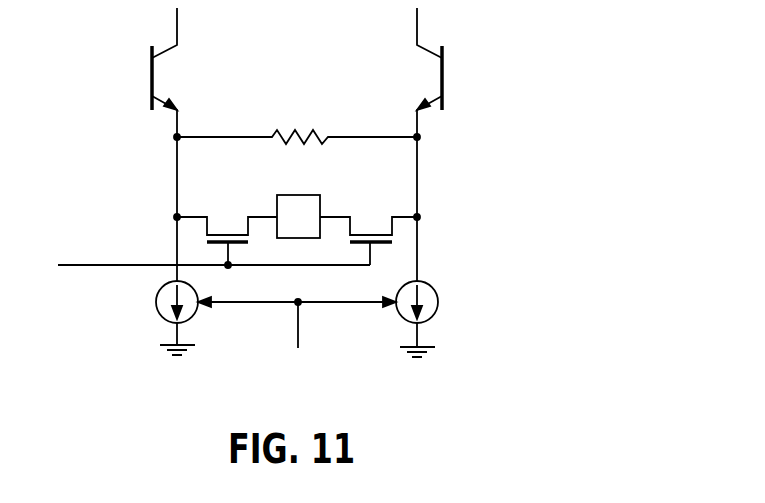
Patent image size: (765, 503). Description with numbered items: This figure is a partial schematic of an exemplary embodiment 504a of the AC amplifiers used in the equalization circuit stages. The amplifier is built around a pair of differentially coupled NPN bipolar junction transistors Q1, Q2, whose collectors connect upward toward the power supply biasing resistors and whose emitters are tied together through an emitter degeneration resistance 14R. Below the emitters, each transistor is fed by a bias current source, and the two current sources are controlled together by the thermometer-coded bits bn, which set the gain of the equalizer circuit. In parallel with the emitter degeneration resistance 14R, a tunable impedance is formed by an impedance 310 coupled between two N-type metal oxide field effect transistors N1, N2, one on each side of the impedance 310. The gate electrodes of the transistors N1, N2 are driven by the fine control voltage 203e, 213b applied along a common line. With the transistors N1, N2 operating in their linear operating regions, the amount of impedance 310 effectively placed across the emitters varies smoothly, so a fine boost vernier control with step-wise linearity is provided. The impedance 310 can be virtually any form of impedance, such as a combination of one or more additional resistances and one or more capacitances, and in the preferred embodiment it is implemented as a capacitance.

The AC amplifier 504a is at (326, 47).
The emitter degeneration resistance 14R is at (297, 121).
The impedance 310 is at (293, 195).
The fine control voltage 203e is at (100, 266).
The fine control voltage 213b is at (196, 290).
The NPN bipolar junction transistor Q1 is at (179, 144).
The NPN bipolar junction transistor Q2 is at (408, 144).
The N-type metal oxide field effect transistor N1 is at (227, 228).
The N-type metal oxide field effect transistor N2 is at (368, 228).
The thermometer-coded bits bn is at (297, 329).